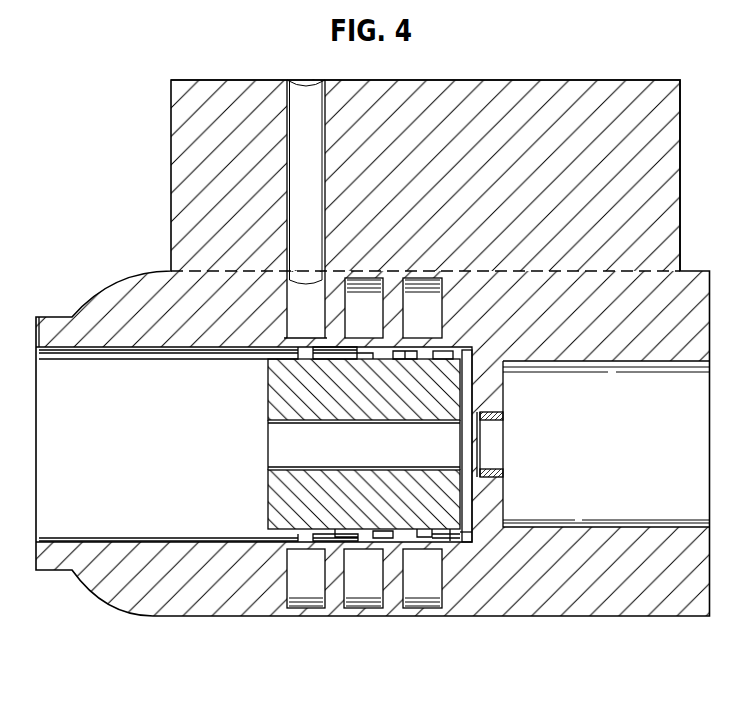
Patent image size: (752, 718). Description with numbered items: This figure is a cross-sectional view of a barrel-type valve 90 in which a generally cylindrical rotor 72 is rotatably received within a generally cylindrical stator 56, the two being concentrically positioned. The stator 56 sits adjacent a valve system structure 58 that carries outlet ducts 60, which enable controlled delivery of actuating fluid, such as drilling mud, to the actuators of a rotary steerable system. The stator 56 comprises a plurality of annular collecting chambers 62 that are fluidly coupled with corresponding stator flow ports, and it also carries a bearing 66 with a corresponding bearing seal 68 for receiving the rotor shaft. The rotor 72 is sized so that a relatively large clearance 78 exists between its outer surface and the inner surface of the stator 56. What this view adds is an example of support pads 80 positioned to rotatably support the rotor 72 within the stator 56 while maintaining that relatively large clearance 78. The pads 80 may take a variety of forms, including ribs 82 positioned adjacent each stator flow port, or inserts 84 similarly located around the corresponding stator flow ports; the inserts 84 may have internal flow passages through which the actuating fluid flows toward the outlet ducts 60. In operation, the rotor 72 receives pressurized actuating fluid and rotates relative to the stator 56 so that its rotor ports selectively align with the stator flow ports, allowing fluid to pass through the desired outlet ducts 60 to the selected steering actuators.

The valve 90 is at (113, 194).
The stator 56 is at (219, 319).
The valve system structure 58 is at (502, 177).
The outlet ducts 60 is at (296, 159).
The collecting chambers 62 is at (307, 598).
The bearing 66 is at (490, 408).
The bearing seal 68 is at (481, 480).
The rotor 72 is at (349, 510).
The clearance 78 is at (382, 352).
The pads 80 is at (468, 341).
The ribs 82 is at (305, 357).
The inserts 84 is at (448, 348).